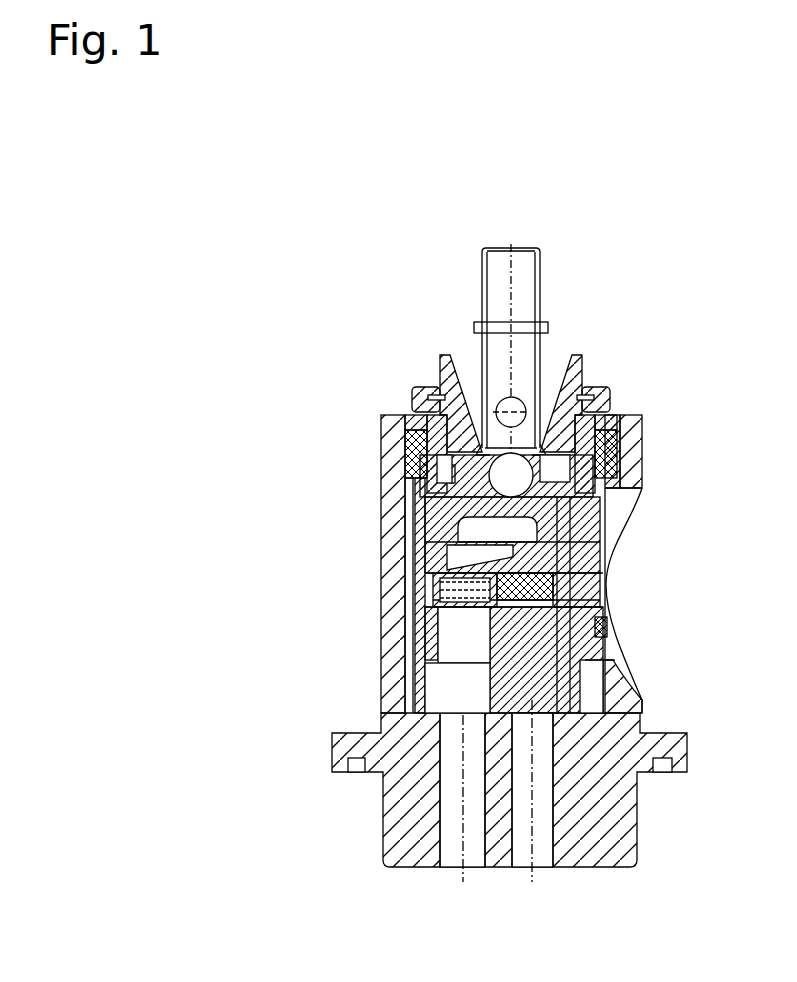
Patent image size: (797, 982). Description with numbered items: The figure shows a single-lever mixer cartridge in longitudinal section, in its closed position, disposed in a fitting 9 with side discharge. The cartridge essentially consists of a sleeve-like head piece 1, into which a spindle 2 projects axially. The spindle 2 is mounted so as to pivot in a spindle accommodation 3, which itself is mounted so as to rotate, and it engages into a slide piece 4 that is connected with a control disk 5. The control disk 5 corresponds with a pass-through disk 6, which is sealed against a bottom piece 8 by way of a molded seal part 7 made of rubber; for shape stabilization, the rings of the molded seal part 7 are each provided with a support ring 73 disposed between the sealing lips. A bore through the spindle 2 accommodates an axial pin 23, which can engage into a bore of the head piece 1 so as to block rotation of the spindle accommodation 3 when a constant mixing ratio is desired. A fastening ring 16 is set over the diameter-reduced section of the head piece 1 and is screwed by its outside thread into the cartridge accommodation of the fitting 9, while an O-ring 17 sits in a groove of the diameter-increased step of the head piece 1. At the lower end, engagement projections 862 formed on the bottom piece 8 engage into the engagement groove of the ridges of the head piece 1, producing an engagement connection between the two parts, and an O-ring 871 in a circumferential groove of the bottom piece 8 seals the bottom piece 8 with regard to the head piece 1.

The head piece 1 is at (408, 590).
The spindle 2 is at (517, 305).
The spindle accommodation 3 is at (627, 438).
The slide piece 4 is at (573, 490).
The control disk 5 is at (613, 522).
The pass-through disk 6 is at (608, 570).
The molded seal part 7 is at (575, 596).
The bottom piece 8 is at (610, 660).
The fitting 9 is at (380, 517).
The fastening ring 16 is at (413, 400).
The O-ring 17 is at (403, 473).
The axial pin 23 is at (610, 390).
The support ring 73 is at (413, 590).
The engagement projections 862 is at (420, 653).
The O-ring 871 is at (610, 625).